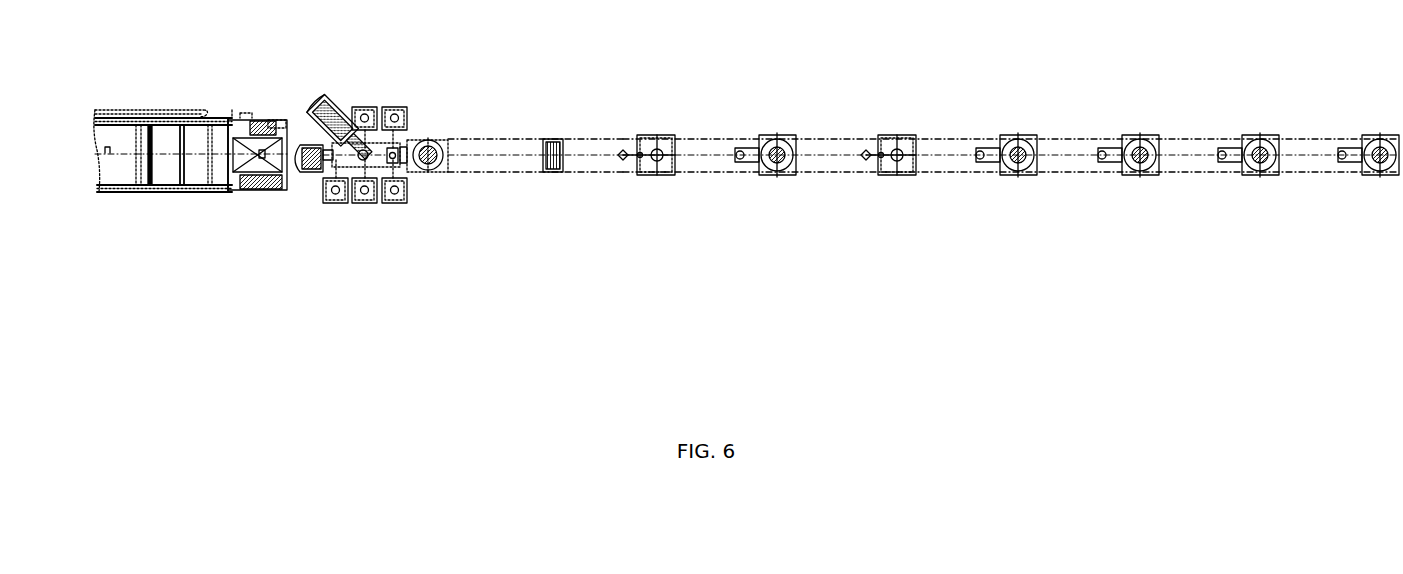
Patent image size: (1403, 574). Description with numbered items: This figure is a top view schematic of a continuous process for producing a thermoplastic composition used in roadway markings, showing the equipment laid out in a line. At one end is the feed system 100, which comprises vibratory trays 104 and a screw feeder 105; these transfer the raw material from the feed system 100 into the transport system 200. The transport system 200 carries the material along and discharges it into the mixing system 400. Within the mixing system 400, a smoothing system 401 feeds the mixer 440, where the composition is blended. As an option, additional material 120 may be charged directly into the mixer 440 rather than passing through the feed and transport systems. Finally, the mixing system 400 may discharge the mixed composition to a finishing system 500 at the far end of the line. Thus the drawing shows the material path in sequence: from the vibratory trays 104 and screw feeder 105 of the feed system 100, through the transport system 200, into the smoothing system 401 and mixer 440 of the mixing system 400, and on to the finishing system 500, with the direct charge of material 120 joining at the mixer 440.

The finishing system 500 is at (87, 100).
The mixing system 400 is at (460, 105).
The transport system 200 is at (460, 105).
The feed system 100 is at (1390, 105).
The material 120 is at (300, 177).
The mixer 440 is at (378, 163).
The smoothing system 401 is at (440, 173).
The screw feeder 105 is at (627, 158).
The vibratory trays 104 is at (740, 163).